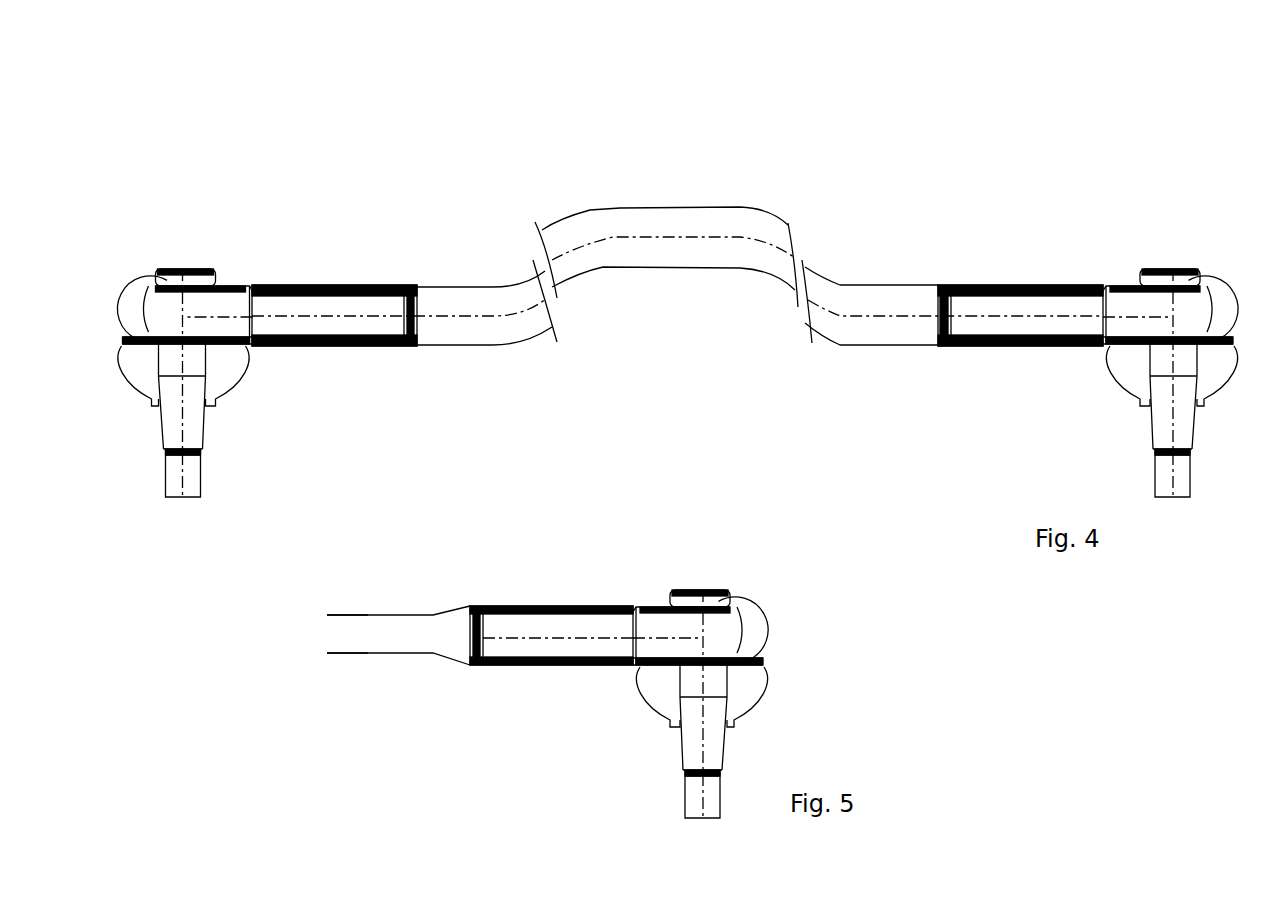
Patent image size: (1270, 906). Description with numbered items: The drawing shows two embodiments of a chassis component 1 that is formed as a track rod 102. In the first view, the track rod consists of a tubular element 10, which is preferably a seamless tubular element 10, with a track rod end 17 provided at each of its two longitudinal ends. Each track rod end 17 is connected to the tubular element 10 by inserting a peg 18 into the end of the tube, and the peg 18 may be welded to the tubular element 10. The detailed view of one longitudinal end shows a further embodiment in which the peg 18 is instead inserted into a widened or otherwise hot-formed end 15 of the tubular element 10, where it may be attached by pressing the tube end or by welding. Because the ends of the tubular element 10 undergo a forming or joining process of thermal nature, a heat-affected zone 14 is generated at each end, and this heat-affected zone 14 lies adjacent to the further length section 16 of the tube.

In FIG. 4, the chassis component 1 is at (487, 127).
In FIG. 4, the track rod 102 is at (677, 287).
In FIG. 4, the tubular element 10 is at (697, 223).
In FIG. 5, the tubular element 10 is at (358, 638).
In FIG. 4, the heat-affected zone 14 is at (1069, 255).
In FIG. 5, the heat-affected zone 14 is at (508, 612).
In FIG. 5, the widened or otherwise hot-formed end 15 is at (489, 575).
In FIG. 5, the further length section 16 is at (412, 589).
In FIG. 4, the track rod end 17 is at (1133, 268).
In FIG. 5, the track rod end 17 is at (723, 580).
In FIG. 4, the peg 18 is at (985, 320).
In FIG. 5, the peg 18 is at (573, 630).